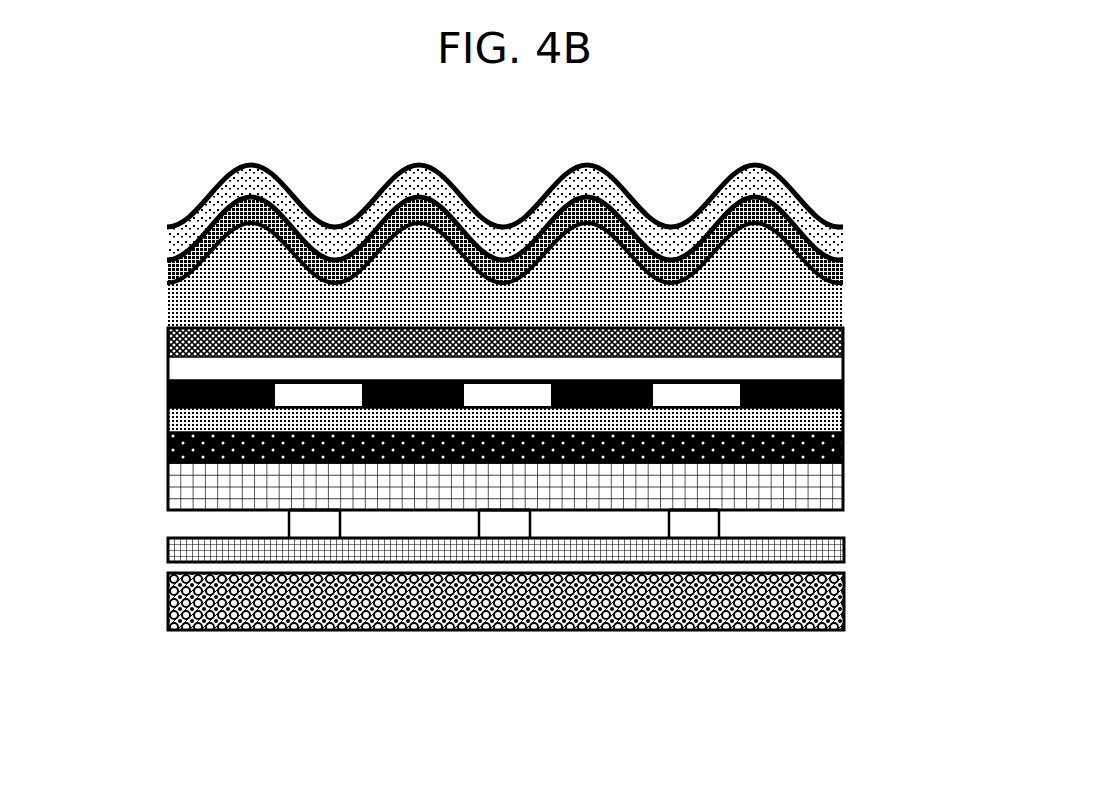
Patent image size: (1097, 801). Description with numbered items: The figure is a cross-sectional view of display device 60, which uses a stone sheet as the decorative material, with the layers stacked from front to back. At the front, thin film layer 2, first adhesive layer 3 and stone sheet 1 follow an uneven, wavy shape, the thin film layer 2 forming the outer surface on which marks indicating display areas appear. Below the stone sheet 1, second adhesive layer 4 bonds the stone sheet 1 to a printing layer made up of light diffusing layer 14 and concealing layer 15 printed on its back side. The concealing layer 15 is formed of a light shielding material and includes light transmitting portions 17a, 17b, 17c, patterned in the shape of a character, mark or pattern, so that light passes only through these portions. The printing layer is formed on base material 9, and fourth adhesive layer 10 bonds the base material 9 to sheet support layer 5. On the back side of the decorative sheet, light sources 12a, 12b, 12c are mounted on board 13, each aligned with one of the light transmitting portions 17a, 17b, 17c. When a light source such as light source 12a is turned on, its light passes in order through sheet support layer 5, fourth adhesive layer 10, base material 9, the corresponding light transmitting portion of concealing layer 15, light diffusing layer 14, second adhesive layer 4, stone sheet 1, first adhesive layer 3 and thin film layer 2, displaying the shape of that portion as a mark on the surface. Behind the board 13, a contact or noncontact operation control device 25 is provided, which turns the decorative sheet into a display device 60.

The display device 60 is at (123, 137).
The thin film layer 2 is at (793, 193).
The first adhesive layer 3 is at (828, 238).
The stone sheet 1 is at (810, 307).
The second adhesive layer 4 is at (843, 327).
The light diffusing layer 14 is at (818, 373).
The concealing layer 15 is at (845, 388).
The light transmitting portion 17a is at (320, 393).
The light transmitting portion 17b is at (510, 393).
The light transmitting portion 17c is at (703, 393).
The base material 9 is at (817, 422).
The fourth adhesive layer 10 is at (845, 450).
The sheet support layer 5 is at (818, 493).
The light source 12a is at (318, 522).
The light source 12b is at (508, 522).
The light source 12c is at (700, 522).
The board 13 is at (820, 550).
The contact or noncontact operation control device 25 is at (813, 602).